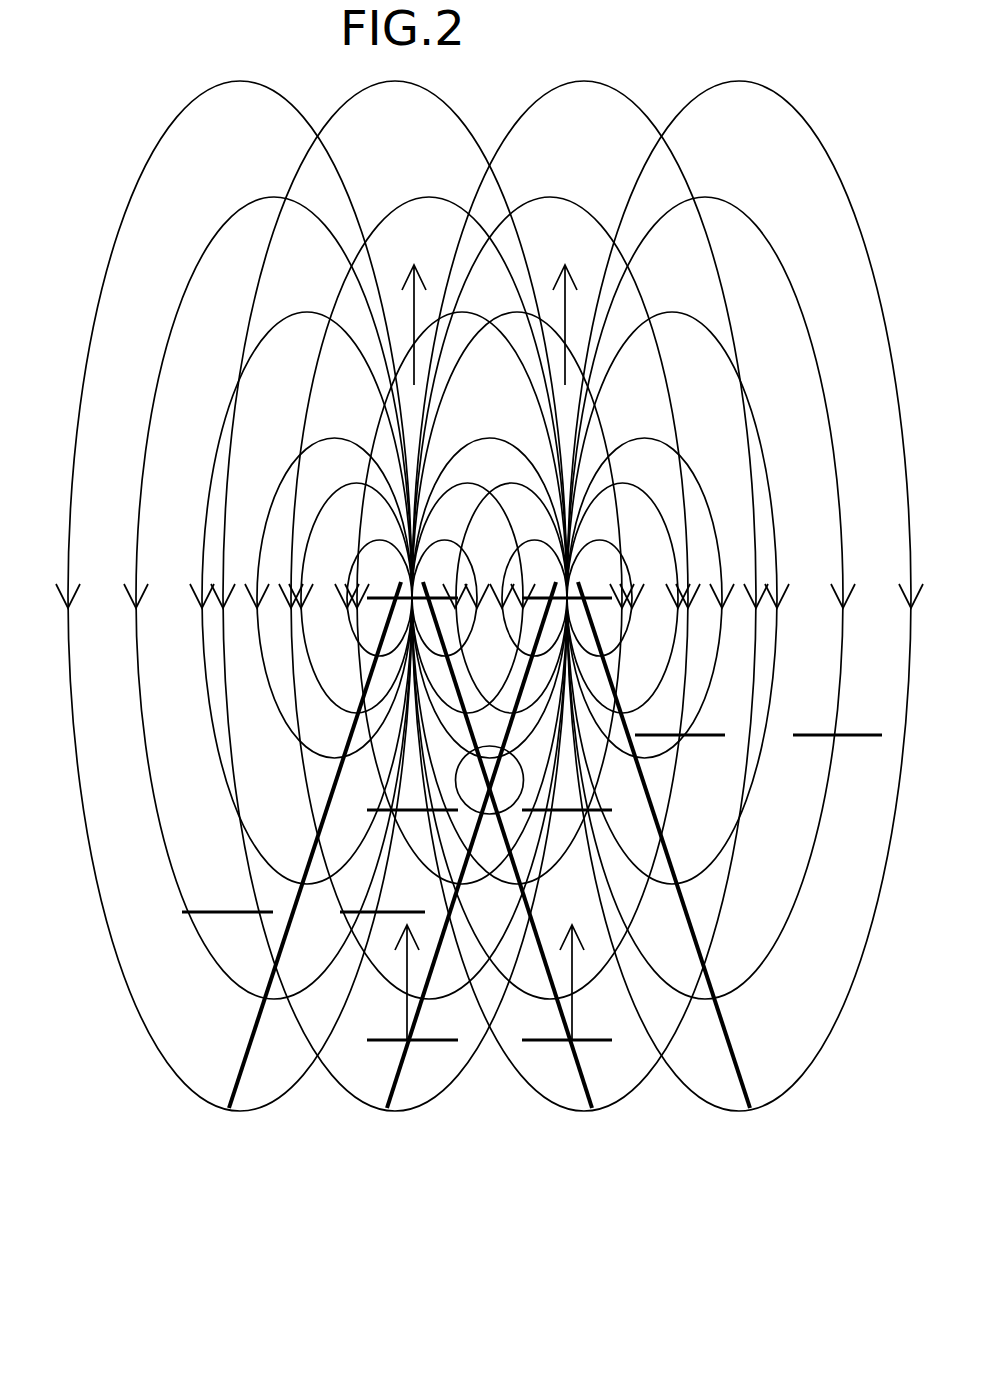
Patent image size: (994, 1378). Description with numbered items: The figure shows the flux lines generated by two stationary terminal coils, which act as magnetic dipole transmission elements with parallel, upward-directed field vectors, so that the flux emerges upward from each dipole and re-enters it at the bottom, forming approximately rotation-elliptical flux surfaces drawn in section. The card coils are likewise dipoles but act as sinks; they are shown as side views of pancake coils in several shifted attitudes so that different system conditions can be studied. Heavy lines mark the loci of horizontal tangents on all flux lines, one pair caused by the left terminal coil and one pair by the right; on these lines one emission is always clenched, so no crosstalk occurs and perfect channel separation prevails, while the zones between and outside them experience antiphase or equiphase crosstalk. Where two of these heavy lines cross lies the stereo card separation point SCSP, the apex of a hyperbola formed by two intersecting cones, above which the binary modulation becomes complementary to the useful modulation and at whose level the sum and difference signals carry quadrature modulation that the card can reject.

The stereo card separation point SCSP is at (472, 792).